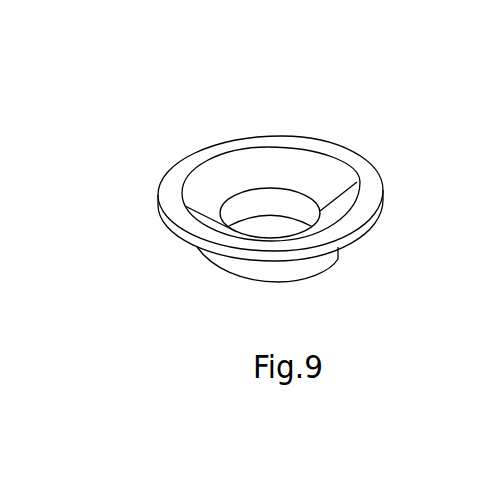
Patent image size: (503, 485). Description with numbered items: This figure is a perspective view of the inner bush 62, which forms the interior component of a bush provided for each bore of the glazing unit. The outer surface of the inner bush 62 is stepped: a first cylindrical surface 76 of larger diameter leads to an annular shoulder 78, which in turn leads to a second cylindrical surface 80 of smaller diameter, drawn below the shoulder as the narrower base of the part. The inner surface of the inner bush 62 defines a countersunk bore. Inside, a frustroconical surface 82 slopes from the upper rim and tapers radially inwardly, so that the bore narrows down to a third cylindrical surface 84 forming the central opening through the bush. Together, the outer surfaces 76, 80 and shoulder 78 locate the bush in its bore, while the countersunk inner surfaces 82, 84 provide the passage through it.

The inner bush 62 is at (399, 105).
The first cylindrical surface 76 is at (351, 232).
The annular shoulder 78 is at (181, 238).
The second cylindrical surface 80 is at (281, 272).
The frustroconical surface 82 is at (262, 164).
The third cylindrical surface 84 is at (286, 204).